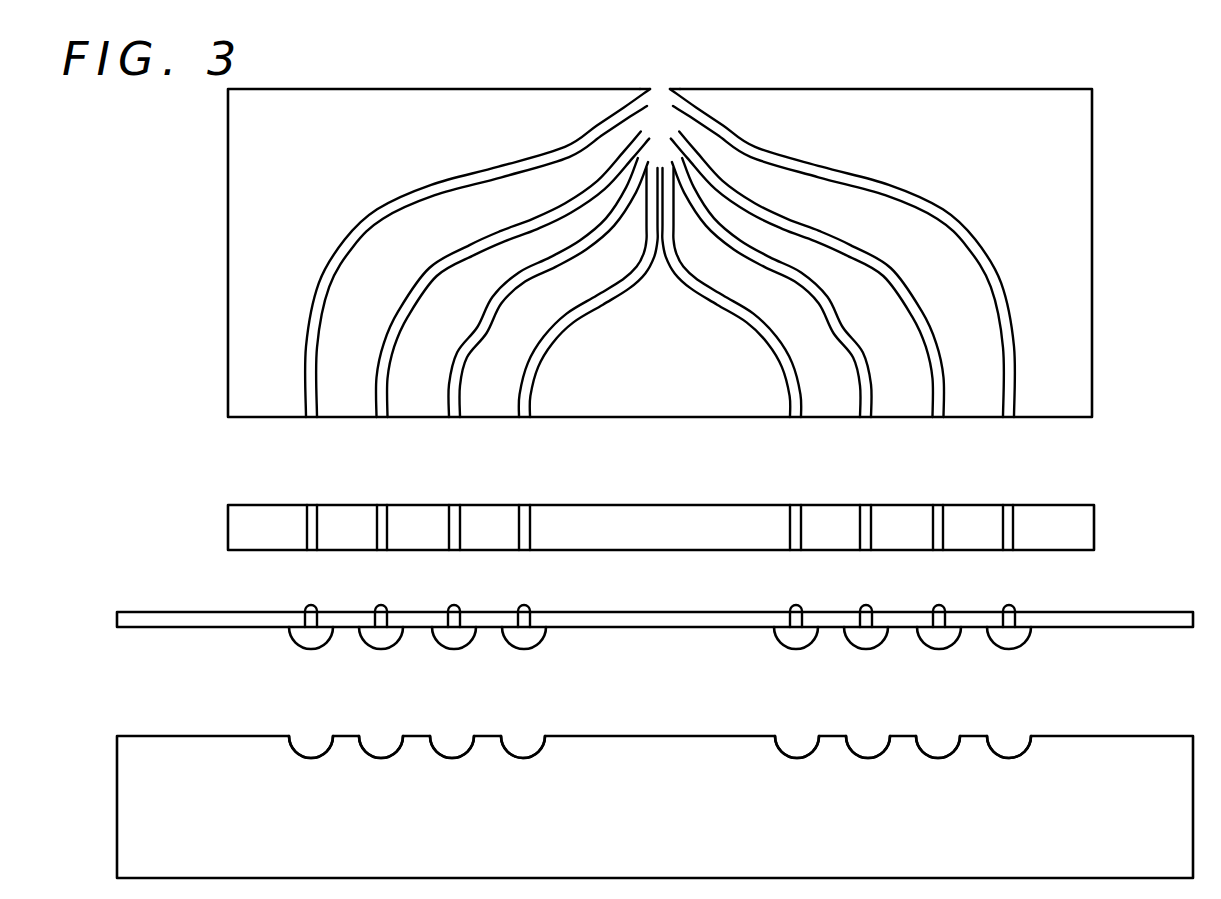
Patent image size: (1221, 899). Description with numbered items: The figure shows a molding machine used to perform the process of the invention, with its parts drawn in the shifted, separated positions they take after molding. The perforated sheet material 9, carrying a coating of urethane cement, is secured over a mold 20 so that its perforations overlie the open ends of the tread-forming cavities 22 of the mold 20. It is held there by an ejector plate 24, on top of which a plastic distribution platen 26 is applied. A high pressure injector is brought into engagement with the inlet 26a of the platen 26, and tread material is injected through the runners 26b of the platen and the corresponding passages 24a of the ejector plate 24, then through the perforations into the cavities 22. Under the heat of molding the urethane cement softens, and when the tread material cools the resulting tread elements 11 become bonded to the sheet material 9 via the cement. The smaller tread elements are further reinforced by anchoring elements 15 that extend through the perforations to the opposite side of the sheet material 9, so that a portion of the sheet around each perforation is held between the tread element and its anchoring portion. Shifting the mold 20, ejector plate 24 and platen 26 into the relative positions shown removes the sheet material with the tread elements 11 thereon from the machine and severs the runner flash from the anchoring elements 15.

The perforated sheet material 9 is at (1165, 610).
The tread elements 11 is at (1020, 638).
The anchoring elements 15 is at (306, 603).
The mold 20 is at (117, 793).
The tread-forming cavities 22 is at (467, 755).
The ejector plate 24 is at (663, 503).
The passages of the ejector plate 24a is at (530, 528).
The plastic distribution platen 26 is at (1030, 88).
The inlet 26a is at (662, 92).
The runners 26b is at (457, 180).